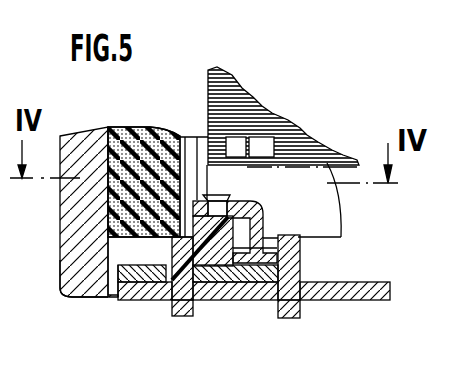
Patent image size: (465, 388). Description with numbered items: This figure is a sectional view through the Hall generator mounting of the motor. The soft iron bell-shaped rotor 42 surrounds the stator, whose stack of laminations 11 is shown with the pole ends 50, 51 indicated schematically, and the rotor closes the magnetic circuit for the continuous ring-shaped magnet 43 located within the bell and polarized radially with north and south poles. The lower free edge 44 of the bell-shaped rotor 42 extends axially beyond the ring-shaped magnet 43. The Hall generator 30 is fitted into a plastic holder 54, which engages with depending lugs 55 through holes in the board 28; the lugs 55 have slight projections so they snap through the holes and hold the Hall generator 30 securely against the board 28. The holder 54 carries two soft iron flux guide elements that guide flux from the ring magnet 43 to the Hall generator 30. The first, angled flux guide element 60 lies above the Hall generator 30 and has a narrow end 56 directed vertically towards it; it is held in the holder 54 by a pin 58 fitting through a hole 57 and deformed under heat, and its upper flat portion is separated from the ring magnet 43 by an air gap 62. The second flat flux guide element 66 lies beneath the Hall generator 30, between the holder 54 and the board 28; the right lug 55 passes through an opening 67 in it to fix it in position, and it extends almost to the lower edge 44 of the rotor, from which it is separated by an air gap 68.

The stack of laminations 11 is at (213, 71).
The pole end 50 is at (249, 91).
The pole end 51 is at (261, 147).
The bell-shaped rotor 42 is at (75, 143).
The ring-shaped magnet 43 is at (128, 134).
The lower free edge 44 is at (72, 275).
The flux guide element 60 is at (198, 137).
The air gap 62 is at (185, 140).
The pin 58 is at (218, 197).
The hole 57 is at (238, 199).
The narrow end 56 is at (262, 212).
The plastic holder 54 is at (303, 268).
The Hall generator 30 is at (283, 250).
The board 28 is at (375, 293).
The depending lugs 55 is at (182, 317).
The second flux guide element 66 is at (140, 278).
The opening 67 is at (170, 266).
The air gap 68 is at (113, 285).